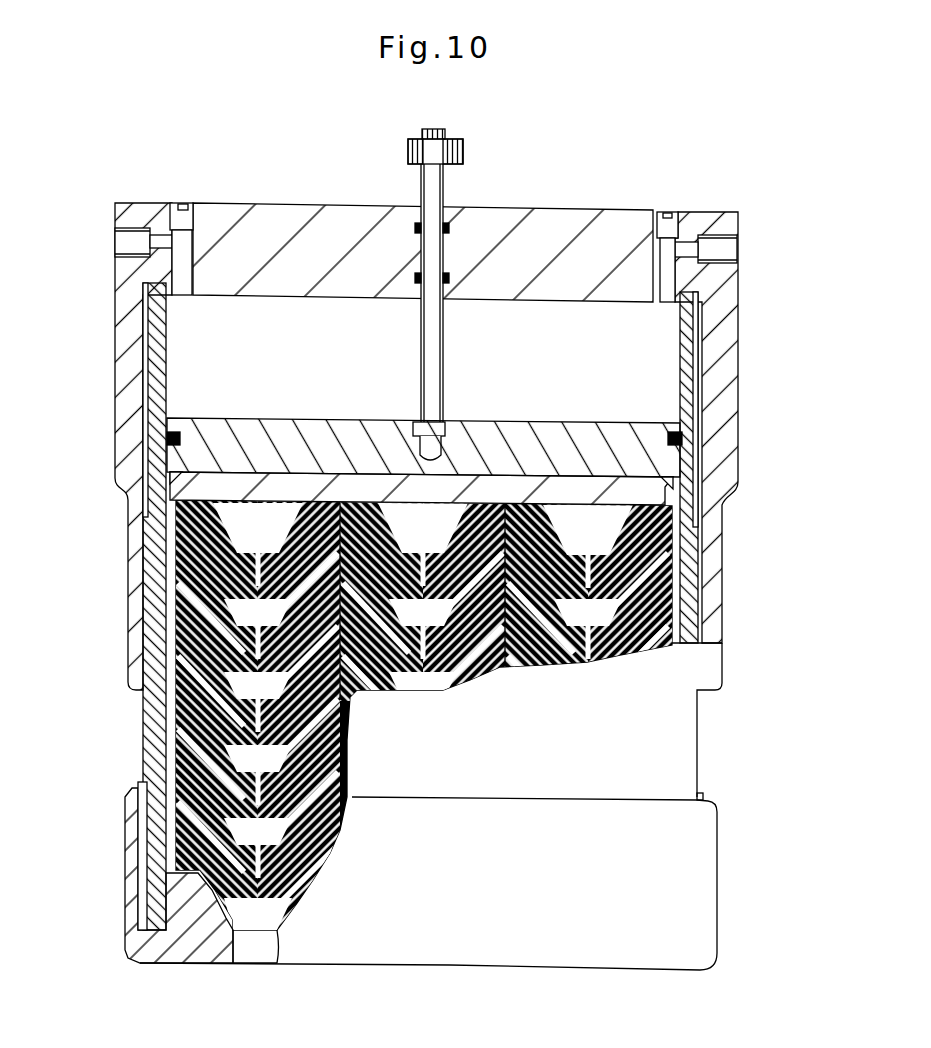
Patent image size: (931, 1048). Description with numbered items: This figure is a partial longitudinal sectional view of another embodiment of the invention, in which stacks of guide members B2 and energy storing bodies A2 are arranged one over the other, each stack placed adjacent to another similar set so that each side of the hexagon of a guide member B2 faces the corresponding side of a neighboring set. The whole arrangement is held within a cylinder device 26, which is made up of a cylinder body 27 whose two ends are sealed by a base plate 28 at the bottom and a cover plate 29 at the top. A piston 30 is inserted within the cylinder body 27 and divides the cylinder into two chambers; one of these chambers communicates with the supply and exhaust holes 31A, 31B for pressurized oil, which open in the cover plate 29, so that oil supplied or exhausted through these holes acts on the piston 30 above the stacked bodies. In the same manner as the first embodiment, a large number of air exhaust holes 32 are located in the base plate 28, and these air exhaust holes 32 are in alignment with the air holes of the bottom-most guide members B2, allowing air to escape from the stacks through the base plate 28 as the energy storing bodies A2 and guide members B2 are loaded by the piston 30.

The cylinder device 26 is at (737, 523).
The cylinder body 27 is at (683, 613).
The base plate 28 is at (188, 938).
The cover plate 29 is at (527, 220).
The piston 30 is at (623, 448).
The supply and exhaust hole 31A is at (720, 248).
The supply and exhaust hole 31B is at (125, 242).
The air exhaust hole 32 is at (257, 953).
The energy storing body A2 is at (176, 573).
The guide member B2 is at (178, 487).